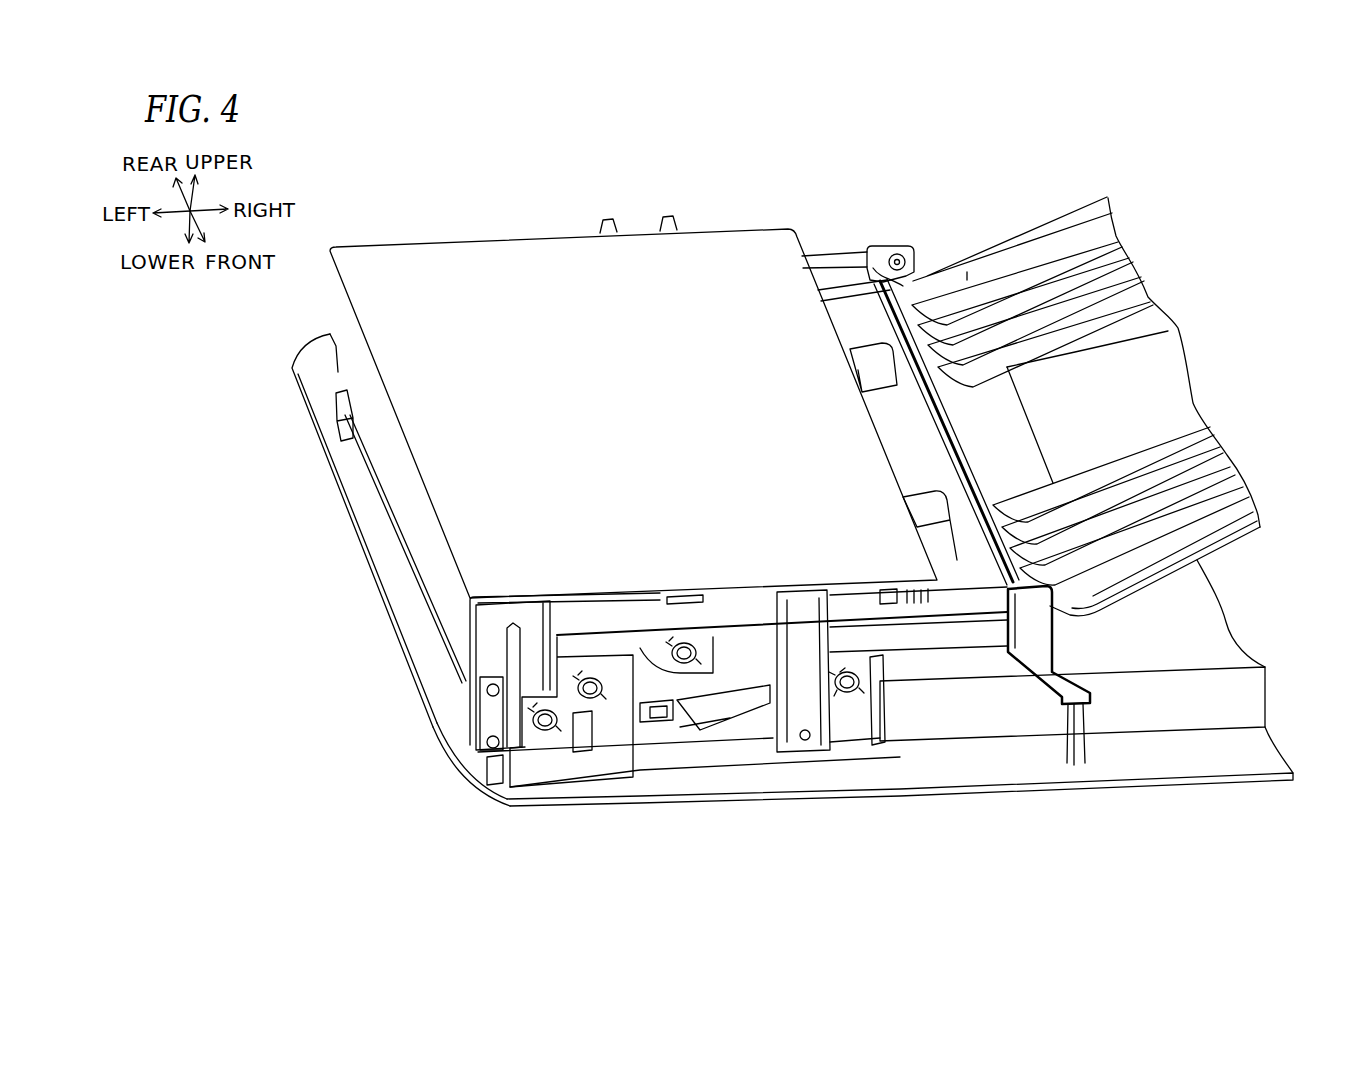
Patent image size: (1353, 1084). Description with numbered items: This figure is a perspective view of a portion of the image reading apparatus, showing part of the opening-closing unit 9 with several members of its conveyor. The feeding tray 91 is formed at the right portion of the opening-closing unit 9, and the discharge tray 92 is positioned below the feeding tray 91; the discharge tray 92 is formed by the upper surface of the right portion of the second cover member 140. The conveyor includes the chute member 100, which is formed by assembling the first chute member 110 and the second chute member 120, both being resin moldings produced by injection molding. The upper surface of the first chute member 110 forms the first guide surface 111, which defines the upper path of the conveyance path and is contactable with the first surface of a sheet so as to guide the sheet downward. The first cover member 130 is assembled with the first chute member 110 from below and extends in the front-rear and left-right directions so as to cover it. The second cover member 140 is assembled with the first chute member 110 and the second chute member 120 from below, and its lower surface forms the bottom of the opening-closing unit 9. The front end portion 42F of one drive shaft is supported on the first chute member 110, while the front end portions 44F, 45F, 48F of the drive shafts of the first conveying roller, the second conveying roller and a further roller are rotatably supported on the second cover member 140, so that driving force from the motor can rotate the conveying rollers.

The opening-closing unit 9 is at (340, 563).
The first cover member 130 is at (535, 264).
The first guide surface 111 is at (913, 440).
The feeding tray 91 is at (1157, 352).
The discharge tray 92 is at (1213, 635).
The second cover member 140 is at (1223, 805).
The chute member 100 is at (705, 771).
The first chute member 110 is at (695, 695).
The second chute member 120 is at (655, 700).
The front end portion of the drive shaft 42F is at (700, 648).
The front end portion of the drive shaft 44F is at (600, 698).
The front end portion of the drive shaft 45F is at (548, 730).
The front end portion of the drive shaft 48F is at (857, 700).